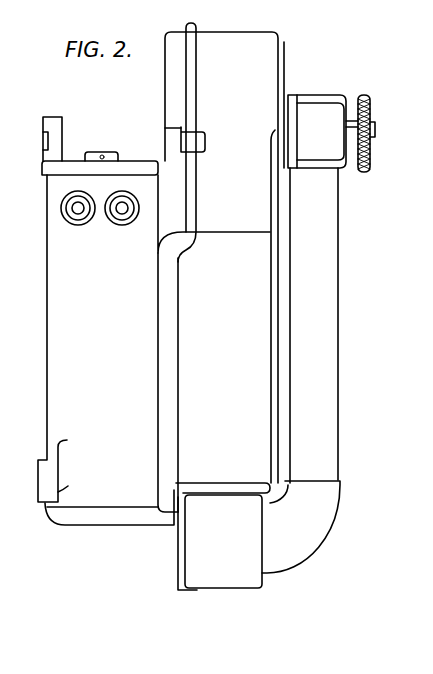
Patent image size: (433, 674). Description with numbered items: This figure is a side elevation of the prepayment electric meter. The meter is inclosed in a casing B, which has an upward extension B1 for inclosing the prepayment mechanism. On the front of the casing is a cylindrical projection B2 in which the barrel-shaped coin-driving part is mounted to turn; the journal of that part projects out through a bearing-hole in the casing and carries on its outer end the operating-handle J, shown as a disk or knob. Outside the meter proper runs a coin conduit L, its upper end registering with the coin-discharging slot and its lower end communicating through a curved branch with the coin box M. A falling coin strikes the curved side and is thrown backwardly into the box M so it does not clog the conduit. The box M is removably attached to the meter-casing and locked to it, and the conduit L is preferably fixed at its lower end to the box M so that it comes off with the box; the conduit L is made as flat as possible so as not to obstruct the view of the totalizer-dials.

The casing B is at (154, 321).
The upward extension B1 is at (224, 253).
The projection B2 is at (316, 113).
The operating-handle J is at (360, 145).
The conduit L is at (301, 370).
The coin box M is at (223, 536).